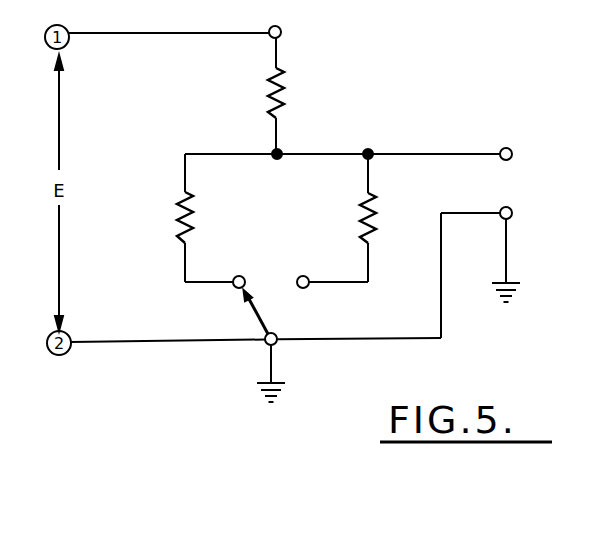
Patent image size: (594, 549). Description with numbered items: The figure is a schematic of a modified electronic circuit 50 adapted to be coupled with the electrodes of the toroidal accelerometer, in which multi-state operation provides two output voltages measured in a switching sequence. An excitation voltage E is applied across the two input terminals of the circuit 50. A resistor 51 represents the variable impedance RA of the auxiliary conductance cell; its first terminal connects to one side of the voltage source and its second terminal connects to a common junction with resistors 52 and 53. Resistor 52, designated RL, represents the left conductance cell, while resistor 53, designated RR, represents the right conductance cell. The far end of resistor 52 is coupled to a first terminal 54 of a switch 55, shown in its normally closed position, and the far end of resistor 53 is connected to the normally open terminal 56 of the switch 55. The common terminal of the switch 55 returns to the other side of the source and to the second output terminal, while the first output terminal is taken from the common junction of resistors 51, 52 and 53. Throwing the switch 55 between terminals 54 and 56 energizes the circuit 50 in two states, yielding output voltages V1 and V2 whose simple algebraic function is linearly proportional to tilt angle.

The circuit 50 is at (430, 84).
The resistor 51 is at (266, 98).
The resistor 52 is at (178, 231).
The resistor 53 is at (374, 214).
The first terminal 54 is at (238, 288).
The switch 55 is at (291, 280).
The normally open terminal 56 is at (307, 288).